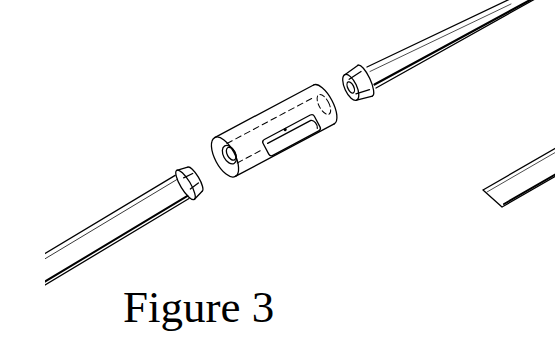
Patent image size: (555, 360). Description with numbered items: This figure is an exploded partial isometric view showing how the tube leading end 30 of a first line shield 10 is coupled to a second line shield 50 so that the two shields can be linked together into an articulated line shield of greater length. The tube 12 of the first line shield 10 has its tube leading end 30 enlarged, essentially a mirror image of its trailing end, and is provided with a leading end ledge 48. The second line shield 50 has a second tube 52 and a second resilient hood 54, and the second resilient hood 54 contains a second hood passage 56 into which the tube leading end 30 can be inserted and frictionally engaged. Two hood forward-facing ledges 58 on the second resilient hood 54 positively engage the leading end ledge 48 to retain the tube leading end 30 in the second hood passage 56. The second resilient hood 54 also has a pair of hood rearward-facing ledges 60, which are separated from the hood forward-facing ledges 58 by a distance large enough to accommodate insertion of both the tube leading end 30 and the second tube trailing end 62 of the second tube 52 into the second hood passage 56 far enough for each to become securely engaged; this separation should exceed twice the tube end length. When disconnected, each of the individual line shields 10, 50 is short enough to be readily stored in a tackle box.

The line shield 10 is at (112, 125).
The tube 12 is at (124, 185).
The tube leading end 30 is at (167, 155).
The leading end ledge 48 is at (183, 203).
The second line shield 50 is at (347, 2).
The second tube 52 is at (459, 68).
The second resilient hood 54 is at (304, 172).
The second hood passage 56 is at (285, 130).
The hood forward-facing ledges 58 is at (248, 120).
The hood rearward-facing ledges 60 is at (287, 98).
The second tube trailing end 62 is at (355, 72).